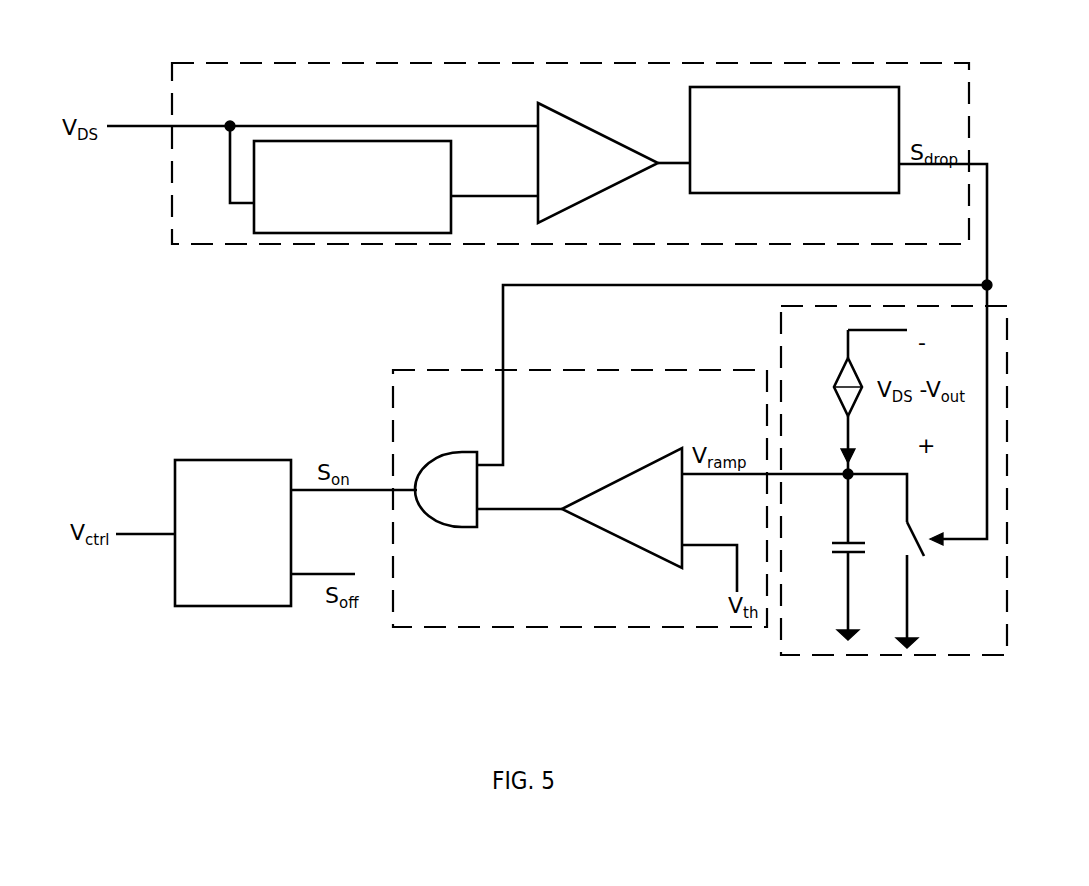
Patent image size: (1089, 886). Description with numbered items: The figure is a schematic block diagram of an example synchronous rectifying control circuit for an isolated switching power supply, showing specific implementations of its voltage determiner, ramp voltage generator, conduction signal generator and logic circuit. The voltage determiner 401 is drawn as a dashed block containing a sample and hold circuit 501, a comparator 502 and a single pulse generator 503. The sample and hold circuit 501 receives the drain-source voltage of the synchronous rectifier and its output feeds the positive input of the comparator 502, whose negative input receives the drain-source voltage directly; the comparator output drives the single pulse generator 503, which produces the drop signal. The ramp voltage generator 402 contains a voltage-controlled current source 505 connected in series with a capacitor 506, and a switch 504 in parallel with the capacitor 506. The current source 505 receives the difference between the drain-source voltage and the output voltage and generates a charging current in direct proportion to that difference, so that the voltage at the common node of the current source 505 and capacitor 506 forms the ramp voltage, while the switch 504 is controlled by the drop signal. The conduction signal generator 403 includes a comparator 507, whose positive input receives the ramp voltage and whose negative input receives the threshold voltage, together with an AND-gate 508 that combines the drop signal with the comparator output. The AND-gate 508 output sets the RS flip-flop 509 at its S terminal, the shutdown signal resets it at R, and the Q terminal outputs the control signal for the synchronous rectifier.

The voltage determiner 401 is at (650, 63).
The ramp voltage generator 402 is at (1007, 590).
The conduction signal generator 403 is at (607, 370).
The sample and hold circuit 501 is at (370, 225).
The comparator 502 is at (600, 128).
The single pulse generator 503 is at (813, 178).
The switch 504 is at (918, 565).
The voltage-controlled current source 505 is at (842, 366).
The capacitor 506 is at (836, 553).
The comparator 507 is at (627, 468).
The AND-gate 508 is at (470, 500).
The RS flip-flop 509 is at (267, 540).